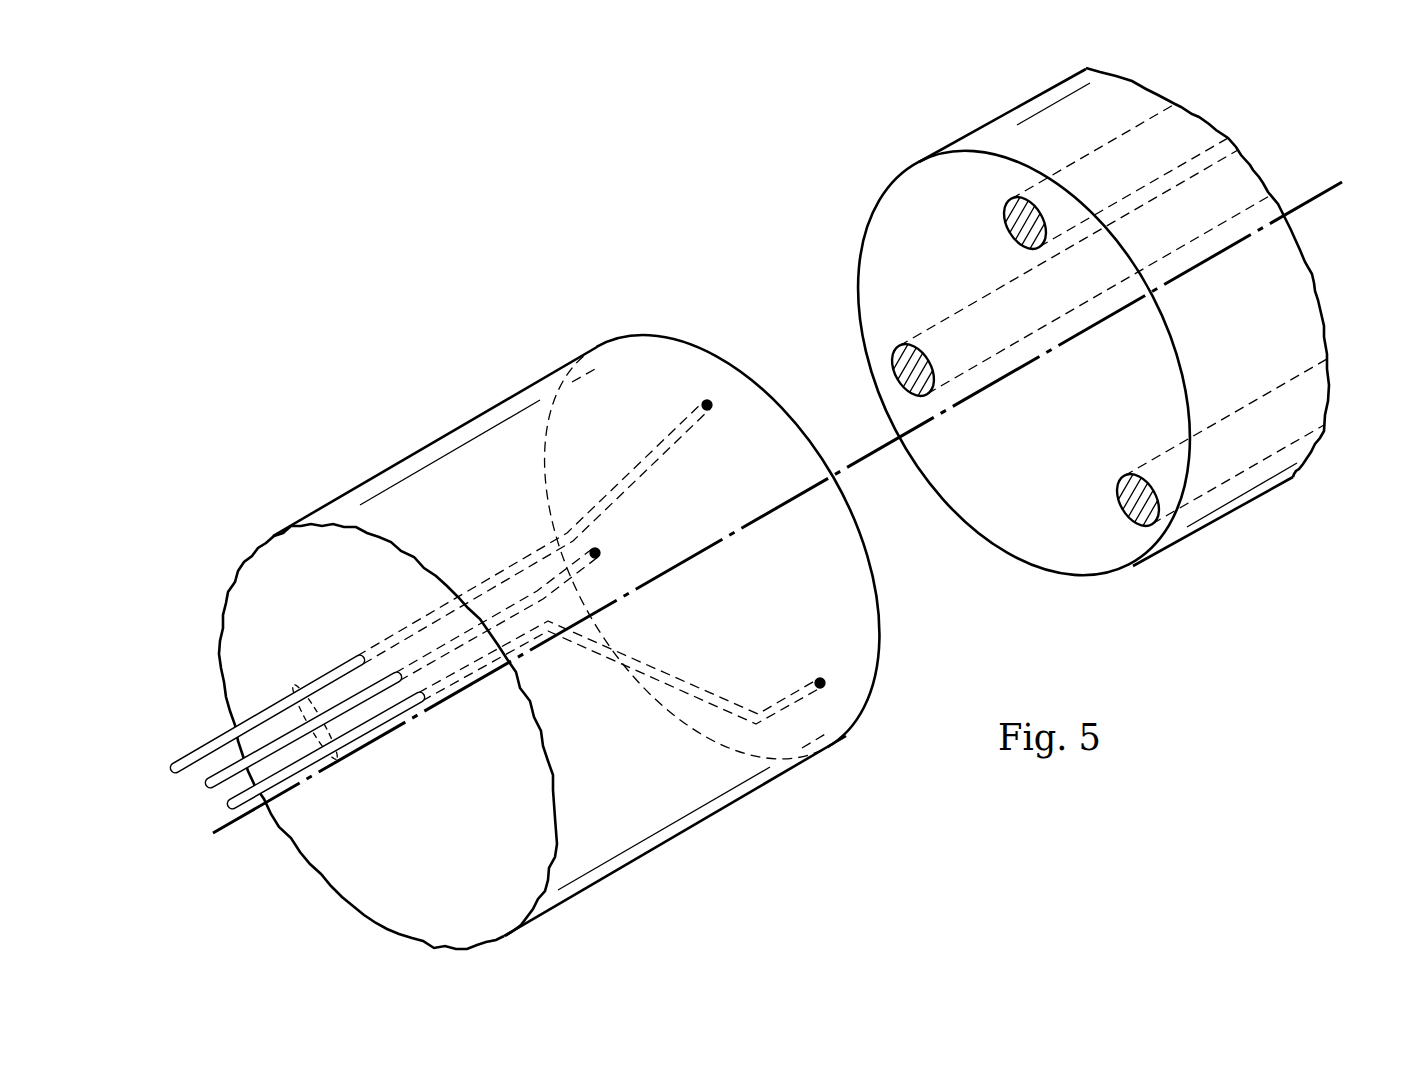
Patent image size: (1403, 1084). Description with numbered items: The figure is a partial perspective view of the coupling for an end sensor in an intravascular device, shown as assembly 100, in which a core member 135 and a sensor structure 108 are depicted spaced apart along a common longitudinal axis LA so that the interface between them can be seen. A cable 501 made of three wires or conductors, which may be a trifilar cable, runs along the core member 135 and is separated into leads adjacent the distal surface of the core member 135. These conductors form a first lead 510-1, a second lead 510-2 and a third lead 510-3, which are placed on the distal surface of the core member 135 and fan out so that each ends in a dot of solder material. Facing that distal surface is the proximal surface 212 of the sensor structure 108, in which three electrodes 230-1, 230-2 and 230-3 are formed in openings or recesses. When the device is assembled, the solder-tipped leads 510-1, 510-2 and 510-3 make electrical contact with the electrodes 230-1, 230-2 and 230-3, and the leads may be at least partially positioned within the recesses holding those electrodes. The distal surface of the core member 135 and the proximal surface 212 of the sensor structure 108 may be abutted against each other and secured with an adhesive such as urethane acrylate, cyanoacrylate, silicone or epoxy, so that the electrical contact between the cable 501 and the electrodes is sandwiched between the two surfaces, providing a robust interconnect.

The optical connector assembly 100 is at (584, 243).
The longitudinal axis LA is at (229, 836).
The core member 135 is at (424, 436).
The cable 501 is at (300, 690).
The lead 510-1 is at (712, 410).
The lead 510-2 is at (819, 677).
The lead 510-3 is at (600, 551).
The sensor structure 108 is at (1053, 338).
The proximal surface 212 is at (866, 273).
The electrode 230-1 is at (1003, 215).
The electrode 230-2 is at (890, 360).
The electrode 230-3 is at (1122, 512).